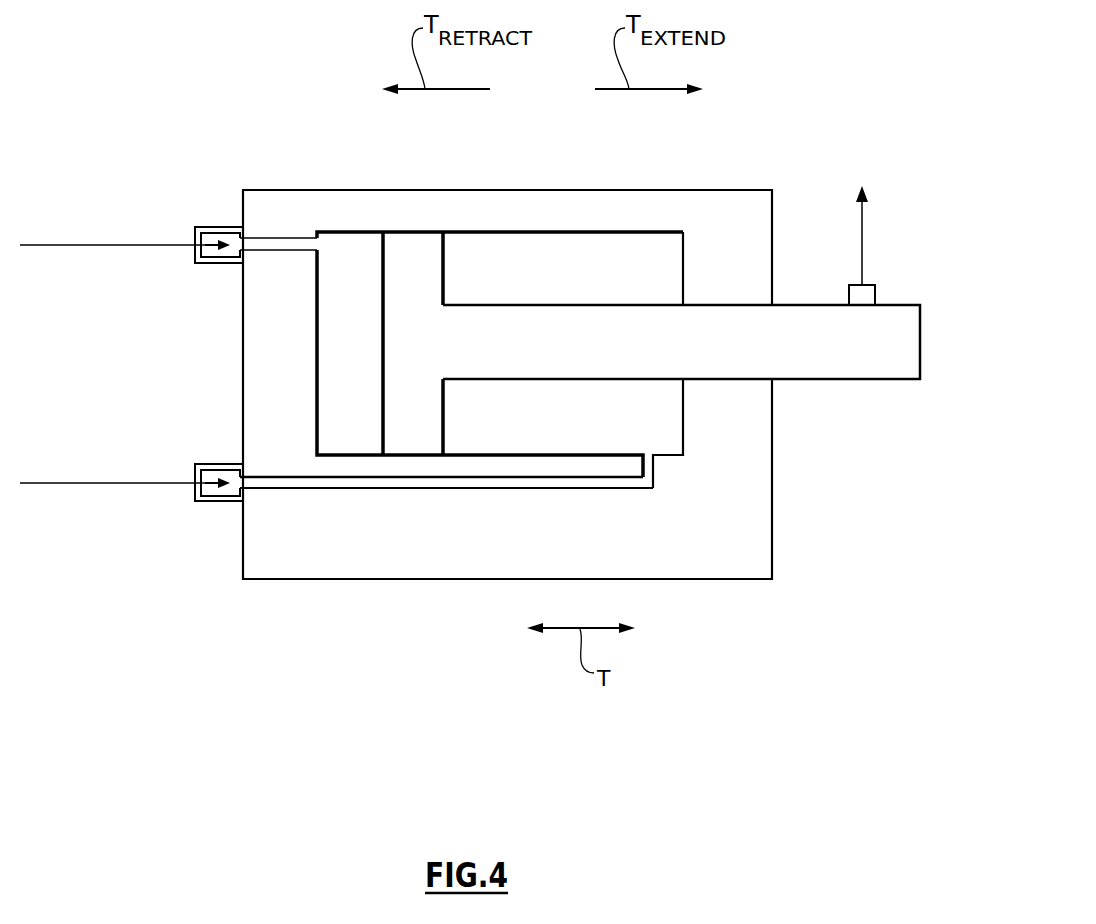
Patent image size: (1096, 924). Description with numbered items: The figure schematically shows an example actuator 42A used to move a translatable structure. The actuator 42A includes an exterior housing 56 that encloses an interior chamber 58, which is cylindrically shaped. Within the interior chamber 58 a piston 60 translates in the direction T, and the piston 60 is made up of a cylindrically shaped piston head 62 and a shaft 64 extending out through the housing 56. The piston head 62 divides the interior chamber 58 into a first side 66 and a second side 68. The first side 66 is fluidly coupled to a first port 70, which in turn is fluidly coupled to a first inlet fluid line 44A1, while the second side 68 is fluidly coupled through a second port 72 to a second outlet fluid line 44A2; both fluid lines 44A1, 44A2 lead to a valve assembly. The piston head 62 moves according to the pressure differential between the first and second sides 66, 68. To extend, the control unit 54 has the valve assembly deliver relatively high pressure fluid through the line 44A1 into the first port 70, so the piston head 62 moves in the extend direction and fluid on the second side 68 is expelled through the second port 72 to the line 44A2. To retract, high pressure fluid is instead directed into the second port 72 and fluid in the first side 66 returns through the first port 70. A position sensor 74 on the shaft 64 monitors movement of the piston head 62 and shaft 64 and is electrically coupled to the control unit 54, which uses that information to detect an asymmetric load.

The actuator 42A is at (183, 119).
The first inlet fluid line 44A1 is at (100, 245).
The second outlet fluid line 44A2 is at (100, 483).
The control unit 54 is at (862, 222).
The exterior housing 56 is at (447, 190).
The interior chamber 58 is at (602, 231).
The piston 60 is at (832, 404).
The piston head 62 is at (418, 258).
The shaft 64 is at (906, 382).
The first side 66 is at (350, 292).
The second side 68 is at (663, 268).
The first port 70 is at (220, 227).
The second port 72 is at (220, 464).
The position sensor 74 is at (877, 295).